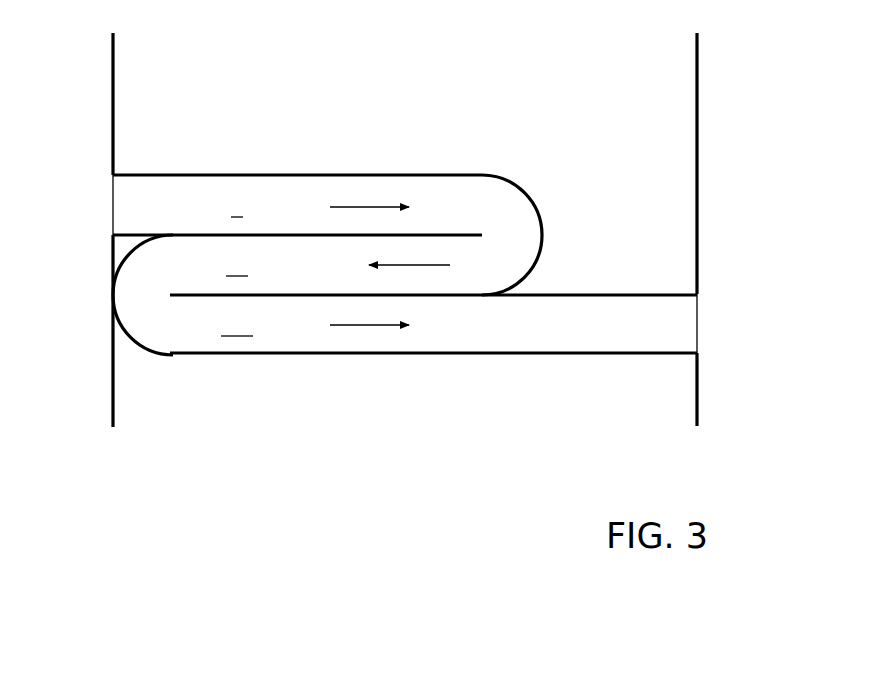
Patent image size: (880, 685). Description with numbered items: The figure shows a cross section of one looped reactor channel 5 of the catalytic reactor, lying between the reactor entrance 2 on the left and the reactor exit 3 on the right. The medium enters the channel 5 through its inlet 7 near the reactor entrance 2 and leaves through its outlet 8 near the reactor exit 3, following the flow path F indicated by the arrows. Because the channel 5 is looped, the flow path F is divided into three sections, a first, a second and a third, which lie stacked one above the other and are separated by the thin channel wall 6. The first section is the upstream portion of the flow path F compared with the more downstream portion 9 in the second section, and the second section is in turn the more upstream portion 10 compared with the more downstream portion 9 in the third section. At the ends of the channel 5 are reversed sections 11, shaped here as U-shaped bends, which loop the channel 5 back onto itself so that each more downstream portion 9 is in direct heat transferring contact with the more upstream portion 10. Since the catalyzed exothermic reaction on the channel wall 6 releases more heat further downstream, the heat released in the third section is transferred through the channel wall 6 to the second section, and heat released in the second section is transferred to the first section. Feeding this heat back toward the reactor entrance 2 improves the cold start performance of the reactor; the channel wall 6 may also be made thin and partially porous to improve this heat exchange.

The reactor entrance 2 is at (113, 148).
The reactor exit 3 is at (697, 148).
The reactor channel 5 is at (185, 219).
The channel wall 6 is at (368, 175).
The inlet 7 is at (131, 206).
The outlet 8 is at (678, 324).
The more downstream portion 9 is at (289, 264).
The more upstream portion 10 is at (290, 206).
The reversed section 11 is at (510, 236).